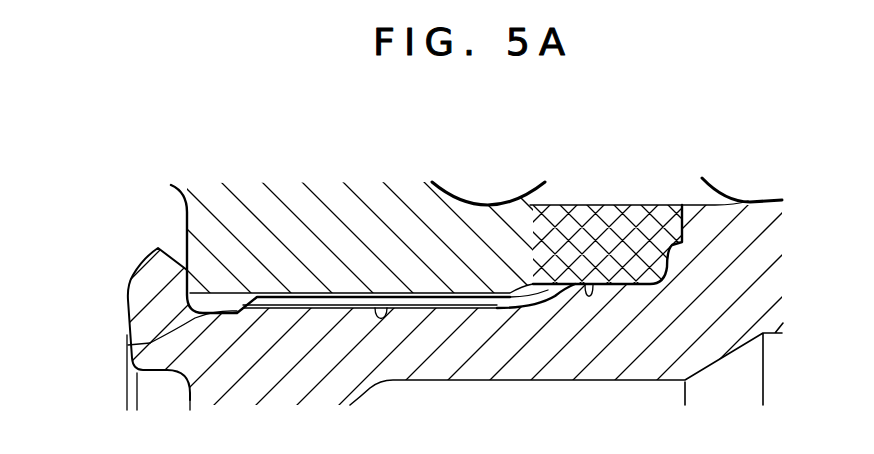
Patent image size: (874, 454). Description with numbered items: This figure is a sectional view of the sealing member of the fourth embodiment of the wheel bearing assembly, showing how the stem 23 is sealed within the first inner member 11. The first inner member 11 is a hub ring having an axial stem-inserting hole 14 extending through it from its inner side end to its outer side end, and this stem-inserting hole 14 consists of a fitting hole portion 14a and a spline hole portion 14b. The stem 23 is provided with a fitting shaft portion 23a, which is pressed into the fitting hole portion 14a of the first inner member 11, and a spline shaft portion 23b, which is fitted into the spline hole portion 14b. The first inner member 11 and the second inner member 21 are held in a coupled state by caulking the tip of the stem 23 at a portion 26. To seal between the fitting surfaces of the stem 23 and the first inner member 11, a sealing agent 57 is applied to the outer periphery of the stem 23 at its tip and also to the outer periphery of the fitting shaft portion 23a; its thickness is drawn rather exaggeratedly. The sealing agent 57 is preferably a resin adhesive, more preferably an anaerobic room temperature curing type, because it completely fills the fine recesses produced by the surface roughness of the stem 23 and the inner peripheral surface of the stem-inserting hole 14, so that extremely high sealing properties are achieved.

The first inner member 11 is at (470, 213).
The stem-inserting hole 14 is at (540, 283).
The fitting hole portion 14a is at (589, 283).
The spline hole portion 14b is at (383, 293).
The second inner member 21 is at (755, 210).
The stem 23 is at (543, 355).
The fitting shaft portion 23a is at (619, 297).
The spline shaft portion 23b is at (313, 293).
The caulked portion 26 is at (140, 281).
The sealing agent 57 is at (128, 345).